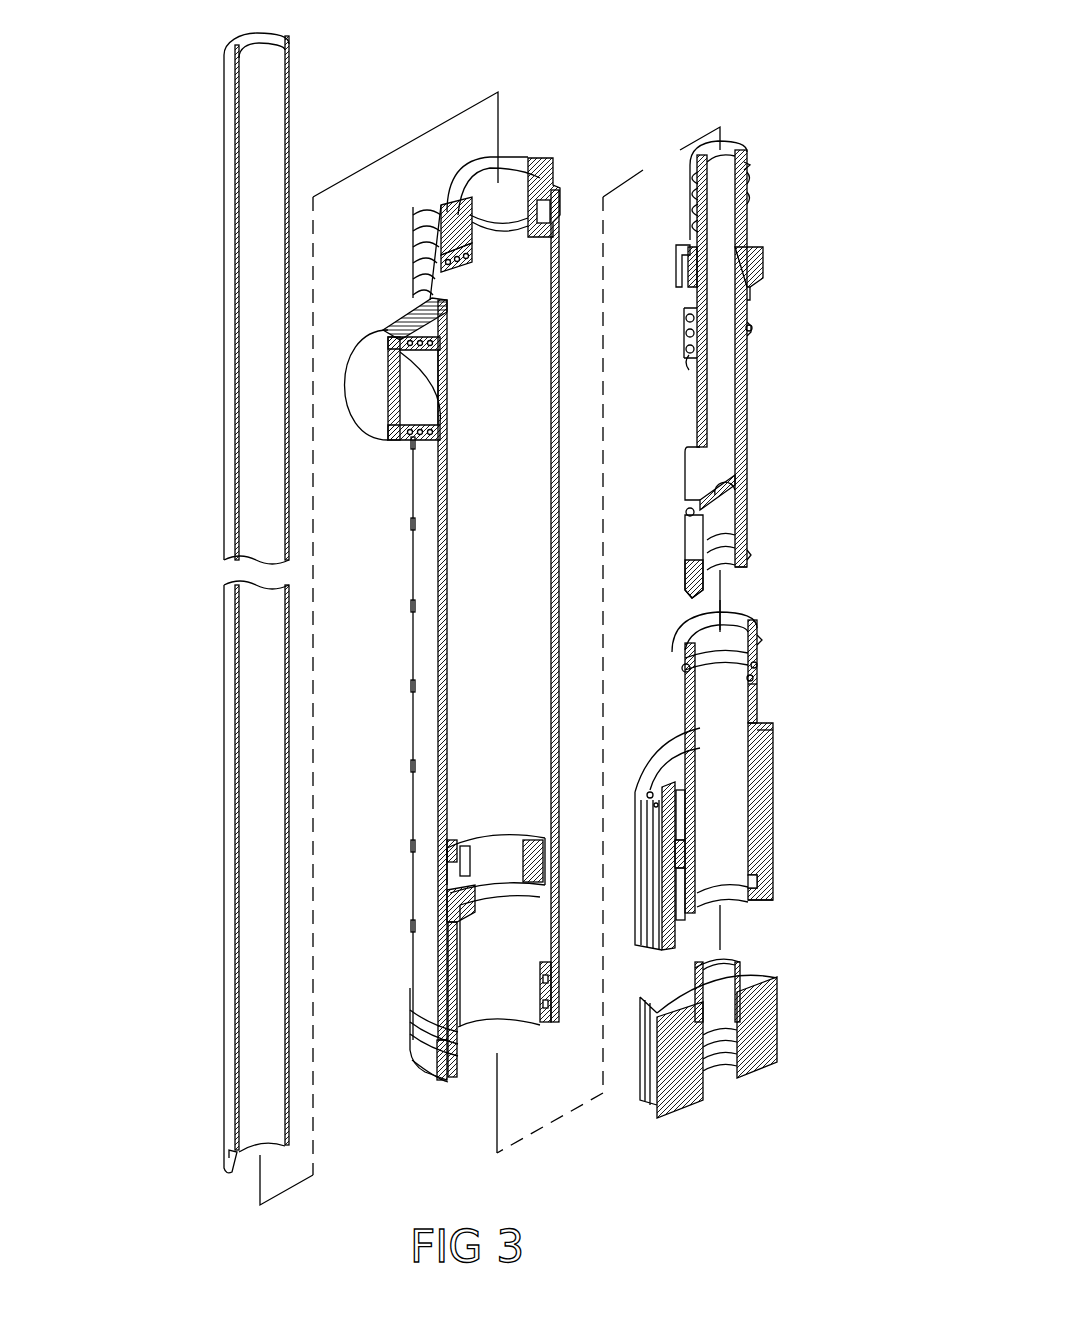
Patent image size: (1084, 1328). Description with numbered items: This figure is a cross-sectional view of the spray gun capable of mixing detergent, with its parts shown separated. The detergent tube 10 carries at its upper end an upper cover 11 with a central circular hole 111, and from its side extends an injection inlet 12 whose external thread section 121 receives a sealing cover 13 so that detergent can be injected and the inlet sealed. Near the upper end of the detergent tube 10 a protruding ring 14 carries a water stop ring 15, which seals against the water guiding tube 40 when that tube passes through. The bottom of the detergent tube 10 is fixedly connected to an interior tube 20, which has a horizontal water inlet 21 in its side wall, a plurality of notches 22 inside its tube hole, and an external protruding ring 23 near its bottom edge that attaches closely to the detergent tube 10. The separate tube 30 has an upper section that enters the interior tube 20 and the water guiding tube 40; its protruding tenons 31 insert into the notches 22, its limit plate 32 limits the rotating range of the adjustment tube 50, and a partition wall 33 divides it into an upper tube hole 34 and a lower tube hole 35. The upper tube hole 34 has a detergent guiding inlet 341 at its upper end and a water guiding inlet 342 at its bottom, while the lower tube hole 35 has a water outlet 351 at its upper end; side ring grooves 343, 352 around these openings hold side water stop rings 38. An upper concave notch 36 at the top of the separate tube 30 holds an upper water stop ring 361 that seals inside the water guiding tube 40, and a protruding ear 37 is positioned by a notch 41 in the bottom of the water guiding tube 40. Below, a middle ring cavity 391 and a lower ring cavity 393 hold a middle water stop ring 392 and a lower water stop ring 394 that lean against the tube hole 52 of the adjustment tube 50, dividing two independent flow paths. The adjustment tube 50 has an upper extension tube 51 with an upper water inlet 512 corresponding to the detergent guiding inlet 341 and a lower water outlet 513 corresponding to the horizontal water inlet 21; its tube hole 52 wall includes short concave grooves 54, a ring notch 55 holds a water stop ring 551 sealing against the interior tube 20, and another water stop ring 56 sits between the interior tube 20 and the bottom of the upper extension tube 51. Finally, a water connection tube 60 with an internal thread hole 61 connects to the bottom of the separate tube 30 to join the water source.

The detergent tube 10 is at (428, 600).
The upper cover 11 is at (435, 188).
The central circular hole 111 is at (478, 178).
The injection inlet 12 is at (413, 372).
The external thread section 121 is at (403, 300).
The sealing cover 13 is at (365, 402).
The protruding ring 14 is at (443, 265).
The water stop ring 15 is at (507, 220).
The interior tube 20 is at (427, 1068).
The horizontal water inlet 21 is at (538, 967).
The notches 22 is at (520, 910).
The external protruding ring 23 is at (553, 1018).
The separate tube 30 is at (722, 155).
The protruding tenons 31 is at (680, 247).
The limit plate 32 is at (760, 283).
The partition wall 33 is at (733, 500).
The upper tube hole 34 is at (718, 388).
The detergent guiding inlet 341 is at (688, 330).
The water guiding inlet 342 is at (695, 465).
The side ring groove 343 is at (690, 355).
The lower tube hole 35 is at (720, 527).
The water outlet 351 is at (697, 535).
The side ring groove 352 is at (688, 582).
The upper concave notch 36 is at (745, 197).
The upper water stop ring 361 is at (743, 170).
The protruding ear 37 is at (680, 282).
The side water stop rings 38 is at (693, 338).
The middle ring cavity 391 is at (748, 333).
The middle water stop ring 392 is at (748, 327).
The lower ring cavity 393 is at (743, 565).
The lower water stop ring 394 is at (747, 557).
The water guiding tube 40 is at (228, 870).
The notch 41 is at (232, 1160).
The adjustment tube 50 is at (772, 890).
The upper extension tube 51 is at (678, 708).
The upper water inlet 512 is at (687, 668).
The lower water outlet 513 is at (760, 667).
The tube hole 52 is at (718, 812).
The short concave grooves 54 is at (683, 867).
The ring notch 55 is at (760, 680).
The water stop ring 551 is at (758, 667).
The water stop ring 56 is at (690, 768).
The water connection tube 60 is at (780, 1018).
The internal thread hole 61 is at (725, 1057).